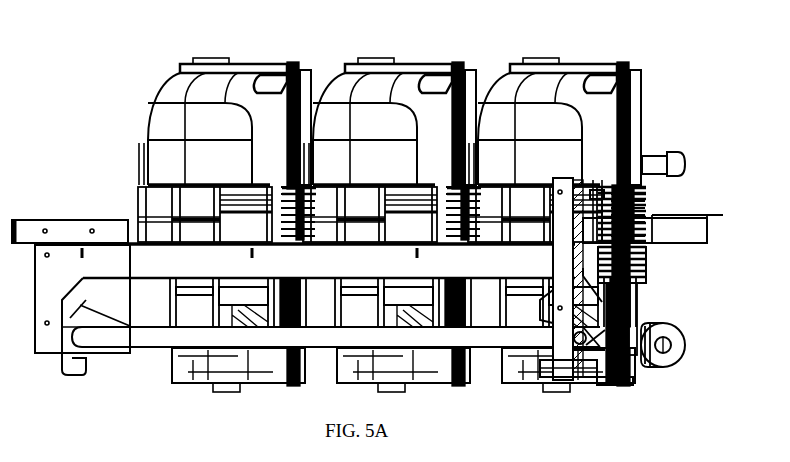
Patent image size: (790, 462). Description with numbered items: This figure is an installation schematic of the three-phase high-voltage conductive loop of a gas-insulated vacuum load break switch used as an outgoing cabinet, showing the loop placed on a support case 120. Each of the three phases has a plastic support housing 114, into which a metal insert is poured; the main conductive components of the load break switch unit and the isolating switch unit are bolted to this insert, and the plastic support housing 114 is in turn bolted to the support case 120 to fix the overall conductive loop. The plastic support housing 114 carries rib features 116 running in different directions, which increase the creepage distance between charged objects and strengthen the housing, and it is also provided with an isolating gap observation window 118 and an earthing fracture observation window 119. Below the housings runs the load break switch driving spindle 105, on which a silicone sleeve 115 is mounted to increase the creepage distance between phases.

The load break switch driving spindle 105 is at (671, 345).
The plastic support housing 114 is at (573, 145).
The silicone sleeve 115 is at (666, 328).
The rib features 116 is at (640, 265).
The isolating gap observation window 118 is at (607, 63).
The earthing fracture observation window 119 is at (633, 373).
The support case 120 is at (135, 262).